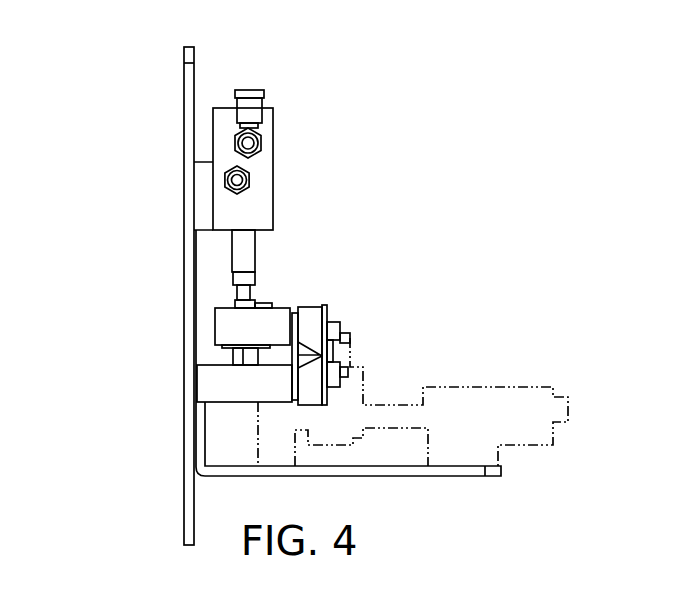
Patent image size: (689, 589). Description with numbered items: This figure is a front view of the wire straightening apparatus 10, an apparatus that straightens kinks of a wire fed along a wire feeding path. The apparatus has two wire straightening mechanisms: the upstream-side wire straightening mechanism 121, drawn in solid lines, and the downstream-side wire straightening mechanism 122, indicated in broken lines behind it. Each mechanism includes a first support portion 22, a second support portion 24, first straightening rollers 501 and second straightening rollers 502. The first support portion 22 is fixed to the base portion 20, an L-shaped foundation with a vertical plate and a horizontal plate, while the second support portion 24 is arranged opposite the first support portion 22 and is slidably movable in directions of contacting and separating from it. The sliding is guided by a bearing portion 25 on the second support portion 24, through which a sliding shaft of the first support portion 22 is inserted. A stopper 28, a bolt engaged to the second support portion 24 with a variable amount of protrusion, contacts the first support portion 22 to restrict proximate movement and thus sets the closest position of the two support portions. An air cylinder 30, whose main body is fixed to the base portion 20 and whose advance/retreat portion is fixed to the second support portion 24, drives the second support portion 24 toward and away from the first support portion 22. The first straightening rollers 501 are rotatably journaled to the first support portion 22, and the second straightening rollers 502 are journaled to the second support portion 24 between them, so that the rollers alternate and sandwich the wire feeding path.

The wire straightening apparatus 10 is at (263, 286).
The base portion 20 is at (195, 462).
The first support portion 22 is at (236, 252).
The second support portion 24 is at (279, 320).
The bearing portion 25 is at (230, 298).
The stopper 28 is at (233, 358).
The air cylinder 30 is at (224, 110).
The upstream-side wire straightening mechanism 121 is at (274, 220).
The downstream-side wire straightening mechanism 122 is at (478, 387).
The first straightening roller 501 is at (317, 368).
The second straightening roller 502 is at (312, 315).